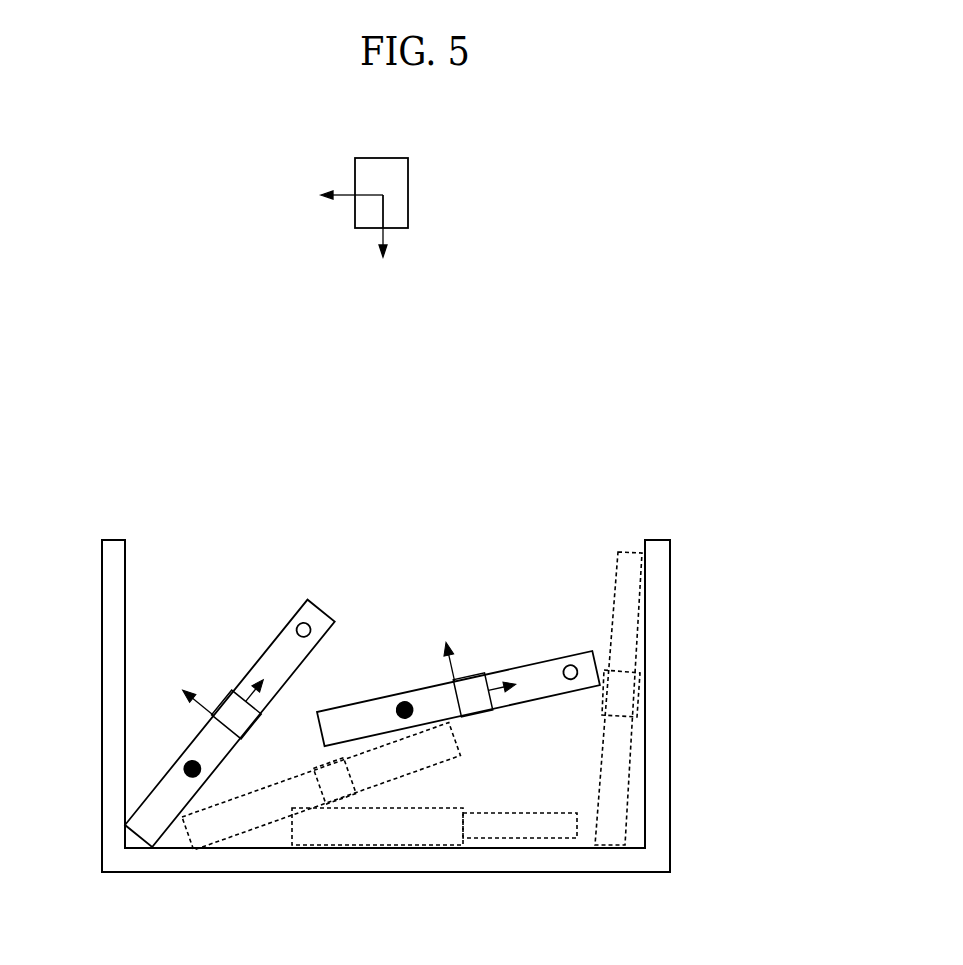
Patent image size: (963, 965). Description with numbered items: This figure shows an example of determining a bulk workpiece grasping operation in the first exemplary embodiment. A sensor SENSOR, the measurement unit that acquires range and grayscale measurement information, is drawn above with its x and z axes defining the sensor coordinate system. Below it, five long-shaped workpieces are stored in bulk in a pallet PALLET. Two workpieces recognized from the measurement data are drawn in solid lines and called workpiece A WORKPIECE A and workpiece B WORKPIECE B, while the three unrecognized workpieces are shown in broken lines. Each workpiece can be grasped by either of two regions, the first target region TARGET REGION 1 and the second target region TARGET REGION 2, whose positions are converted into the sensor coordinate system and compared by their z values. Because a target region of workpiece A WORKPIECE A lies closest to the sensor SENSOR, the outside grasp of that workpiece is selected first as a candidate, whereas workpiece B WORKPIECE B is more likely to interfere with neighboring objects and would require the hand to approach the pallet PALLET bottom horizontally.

The sensor SENSOR is at (397, 177).
The pallet PALLET is at (530, 862).
The workpiece A WORKPIECE A is at (143, 822).
The workpiece B WORKPIECE B is at (552, 678).
The target region 1 TARGET REGION 1 is at (403, 718).
The target region 2 TARGET REGION 2 is at (567, 657).